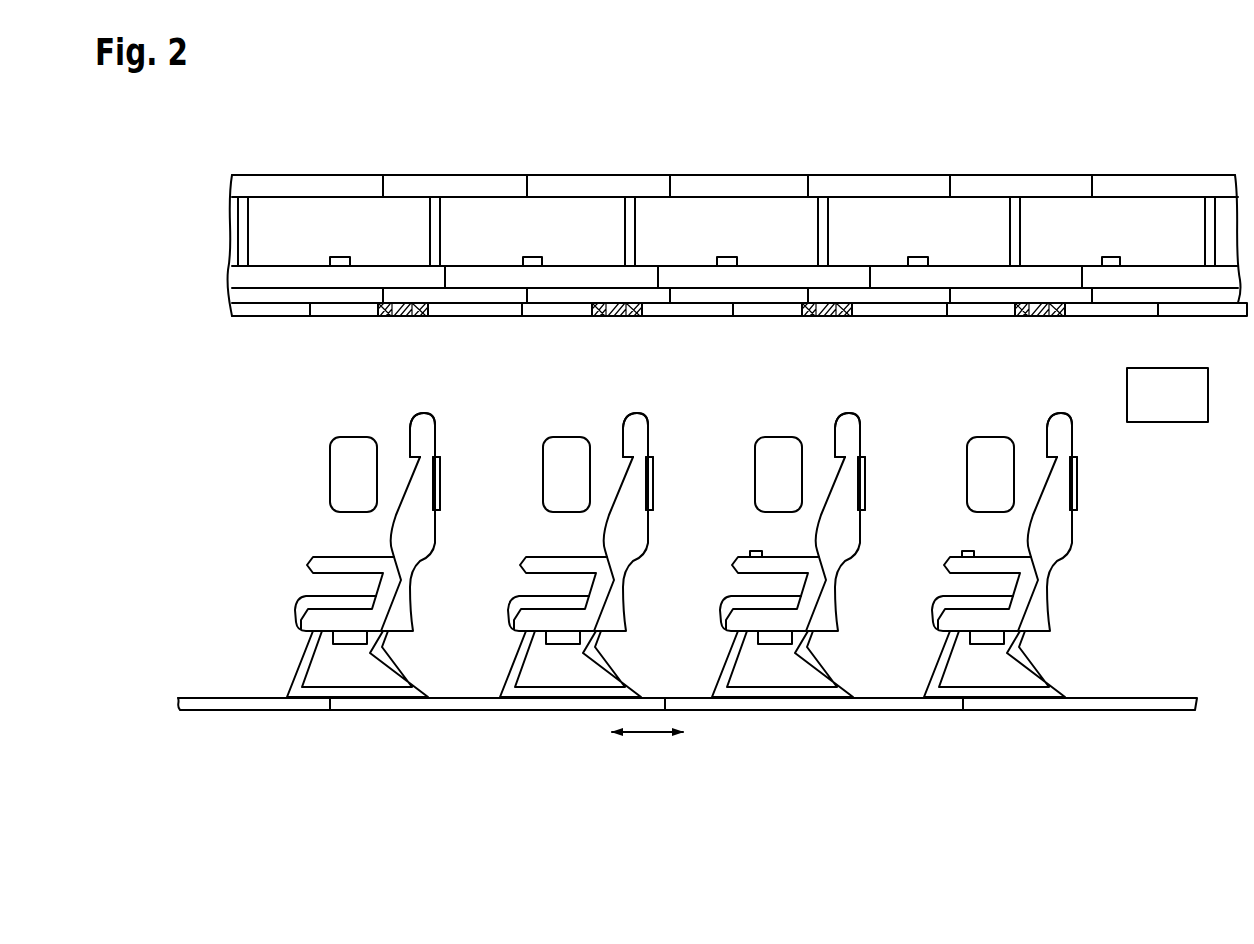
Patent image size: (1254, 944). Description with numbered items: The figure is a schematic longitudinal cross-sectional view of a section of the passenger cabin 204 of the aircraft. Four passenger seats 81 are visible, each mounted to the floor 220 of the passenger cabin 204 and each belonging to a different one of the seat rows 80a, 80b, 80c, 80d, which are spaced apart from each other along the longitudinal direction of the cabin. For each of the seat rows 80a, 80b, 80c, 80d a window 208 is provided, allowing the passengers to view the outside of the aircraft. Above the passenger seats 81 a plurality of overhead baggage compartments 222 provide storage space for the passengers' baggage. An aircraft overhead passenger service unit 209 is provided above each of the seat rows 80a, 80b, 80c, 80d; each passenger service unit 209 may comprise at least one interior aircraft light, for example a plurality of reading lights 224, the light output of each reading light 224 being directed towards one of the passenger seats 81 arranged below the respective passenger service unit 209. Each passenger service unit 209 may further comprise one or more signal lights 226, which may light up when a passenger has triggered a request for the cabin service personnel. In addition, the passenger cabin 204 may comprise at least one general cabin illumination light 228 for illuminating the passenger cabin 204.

The passenger cabin 204 is at (230, 557).
The overhead baggage compartments 222 is at (368, 218).
The reading lights 224 is at (420, 303).
The signal lights 226 is at (386, 318).
The aircraft overhead passenger service unit 209 is at (714, 270).
The passenger seat 81 is at (428, 400).
The window 208 is at (340, 457).
The seat row 80a is at (318, 538).
The seat row 80b is at (558, 555).
The seat row 80c is at (770, 555).
The seat row 80d is at (982, 555).
The floor 220 is at (1147, 698).
The general cabin illumination light 228 is at (1165, 405).